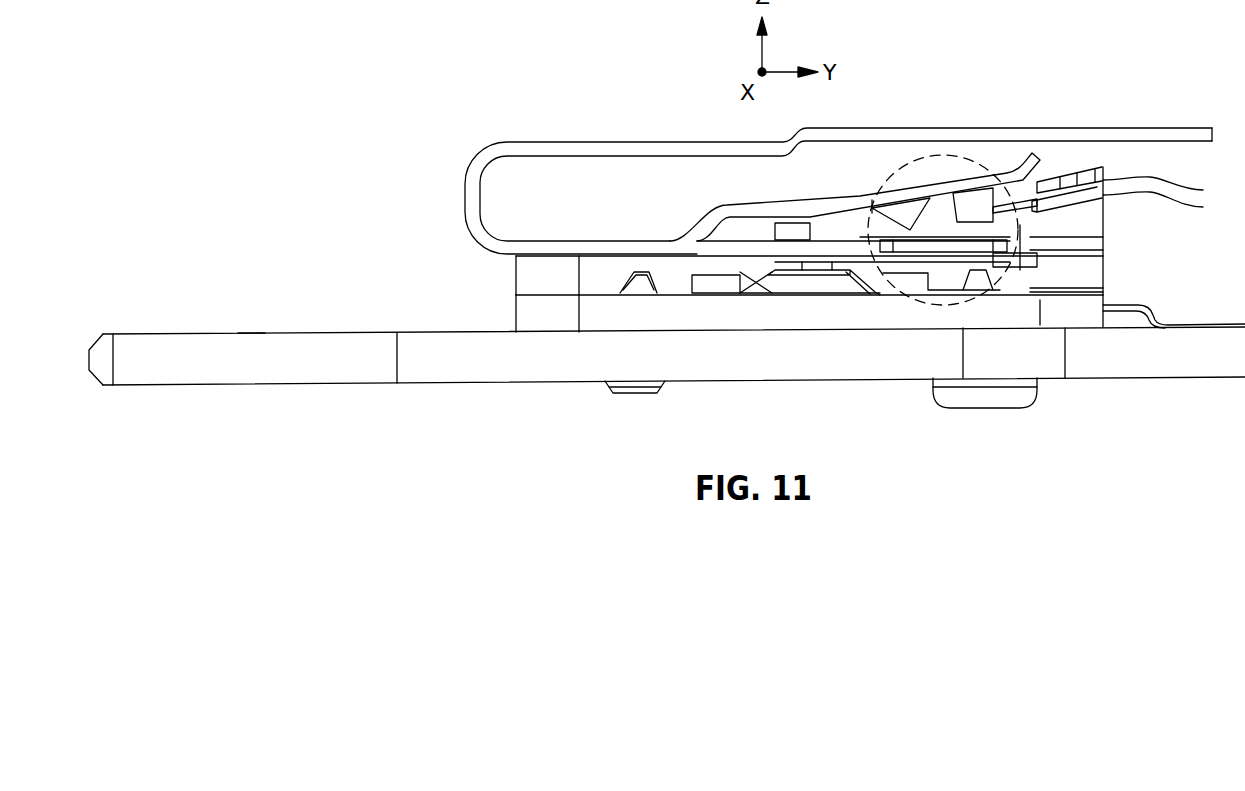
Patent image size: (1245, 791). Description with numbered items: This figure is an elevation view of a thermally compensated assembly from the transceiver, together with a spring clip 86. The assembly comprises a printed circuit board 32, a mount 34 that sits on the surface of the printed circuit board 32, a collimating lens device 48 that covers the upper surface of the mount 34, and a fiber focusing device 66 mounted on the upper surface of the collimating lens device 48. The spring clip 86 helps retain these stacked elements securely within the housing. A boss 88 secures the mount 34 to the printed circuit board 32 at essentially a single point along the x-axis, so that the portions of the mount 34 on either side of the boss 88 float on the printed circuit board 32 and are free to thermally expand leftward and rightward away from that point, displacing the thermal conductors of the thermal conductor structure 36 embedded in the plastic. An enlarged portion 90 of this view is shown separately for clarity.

The printed circuit board 32 is at (1127, 378).
The mount 34 is at (516, 311).
The thermal conductor structure 36 is at (1143, 298).
The collimating lens device 48 is at (516, 277).
The fiber focusing device 66 is at (1105, 218).
The spring clip 86 is at (607, 142).
The boss 88 is at (988, 410).
The enlarged portion 90 is at (922, 305).